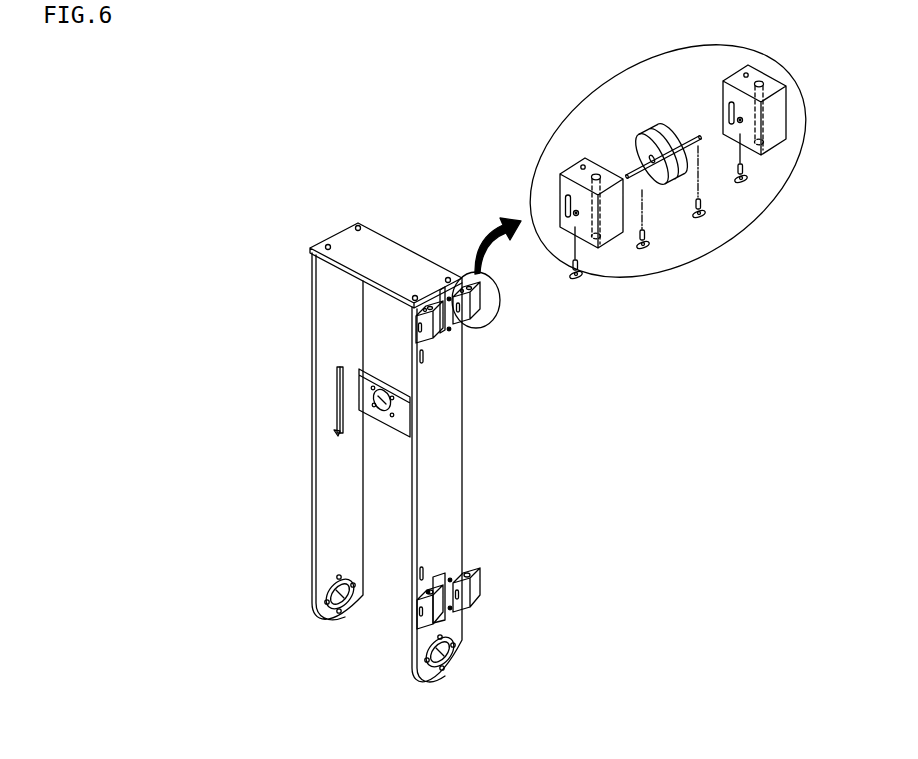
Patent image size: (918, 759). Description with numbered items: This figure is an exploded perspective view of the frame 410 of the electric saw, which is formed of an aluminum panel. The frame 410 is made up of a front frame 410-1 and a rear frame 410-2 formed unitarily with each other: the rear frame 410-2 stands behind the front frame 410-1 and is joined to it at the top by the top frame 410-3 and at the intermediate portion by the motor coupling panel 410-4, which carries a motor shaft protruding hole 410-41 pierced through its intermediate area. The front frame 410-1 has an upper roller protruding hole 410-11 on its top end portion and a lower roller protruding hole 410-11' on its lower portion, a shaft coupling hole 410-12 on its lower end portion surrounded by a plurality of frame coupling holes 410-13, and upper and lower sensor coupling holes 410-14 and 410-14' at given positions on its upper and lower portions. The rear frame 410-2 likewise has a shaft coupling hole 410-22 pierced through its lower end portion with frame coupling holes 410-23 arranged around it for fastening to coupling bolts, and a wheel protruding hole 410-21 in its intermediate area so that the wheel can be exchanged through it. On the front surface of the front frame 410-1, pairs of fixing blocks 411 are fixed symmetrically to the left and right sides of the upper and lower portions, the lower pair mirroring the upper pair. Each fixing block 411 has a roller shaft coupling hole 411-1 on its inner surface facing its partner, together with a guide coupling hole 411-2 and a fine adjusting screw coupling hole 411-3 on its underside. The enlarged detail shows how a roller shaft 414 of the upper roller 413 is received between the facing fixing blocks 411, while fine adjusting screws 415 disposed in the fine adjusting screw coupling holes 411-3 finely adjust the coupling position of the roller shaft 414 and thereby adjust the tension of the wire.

The frame 410 is at (300, 212).
The front frame 410-1 is at (417, 352).
The rear frame 410-2 is at (337, 347).
The top frame 410-3 is at (342, 256).
The motor coupling panel 410-4 is at (331, 398).
The motor shaft protruding hole 410-41 is at (379, 400).
The wheel protruding hole 410-21 is at (338, 436).
The upper roller protruding hole 410-11 is at (438, 269).
The lower roller protruding hole 410-11' is at (480, 617).
The upper sensor coupling hole 410-14 is at (473, 381).
The lower sensor coupling hole 410-14' is at (475, 564).
The shaft coupling hole 410-12 is at (447, 660).
The frame coupling holes 410-13 is at (438, 668).
The shaft coupling hole 410-22 is at (346, 604).
The frame coupling holes 410-23 is at (329, 604).
The fixing blocks 411 is at (601, 347).
The roller shaft coupling holes 411-1 is at (448, 335).
The guide coupling holes 411-2 is at (469, 580).
The fine adjusting screw coupling holes 411-3 is at (560, 228).
The upper roller 413 is at (643, 146).
The roller shaft 414 is at (692, 130).
The fine adjusting screws 415 is at (698, 218).